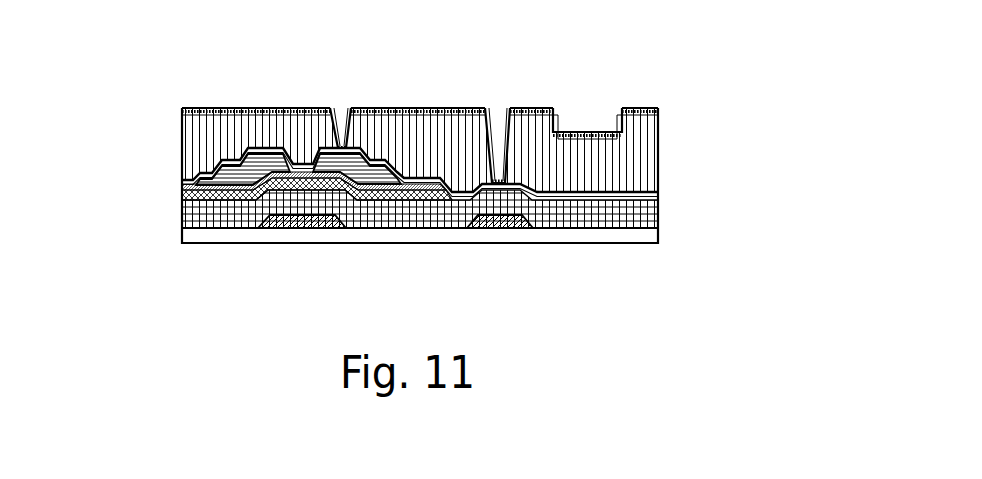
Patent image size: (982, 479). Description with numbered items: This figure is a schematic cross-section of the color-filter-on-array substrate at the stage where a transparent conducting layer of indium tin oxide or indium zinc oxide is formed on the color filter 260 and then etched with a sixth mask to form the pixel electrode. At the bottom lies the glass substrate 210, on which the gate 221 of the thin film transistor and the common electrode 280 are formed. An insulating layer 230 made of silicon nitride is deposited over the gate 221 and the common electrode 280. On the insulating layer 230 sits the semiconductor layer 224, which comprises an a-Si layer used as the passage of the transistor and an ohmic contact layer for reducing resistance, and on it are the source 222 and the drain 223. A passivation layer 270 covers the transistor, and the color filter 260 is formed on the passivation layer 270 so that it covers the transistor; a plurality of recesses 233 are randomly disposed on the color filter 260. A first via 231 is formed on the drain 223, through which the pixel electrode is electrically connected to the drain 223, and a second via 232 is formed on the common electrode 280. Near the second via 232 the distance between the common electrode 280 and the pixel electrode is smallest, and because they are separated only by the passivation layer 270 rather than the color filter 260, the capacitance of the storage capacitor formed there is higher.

The glass substrate 210 is at (232, 228).
The gate 221 is at (303, 222).
The source 222 is at (270, 160).
The drain 223 is at (400, 155).
The semiconductor layer 224 is at (265, 178).
The insulating layer 230 is at (635, 210).
The first via 231 is at (346, 110).
The second via 232 is at (493, 112).
The recesses 233 is at (586, 112).
The color filter 260 is at (190, 130).
The passivation layer 270 is at (655, 195).
The common electrode 280 is at (517, 217).